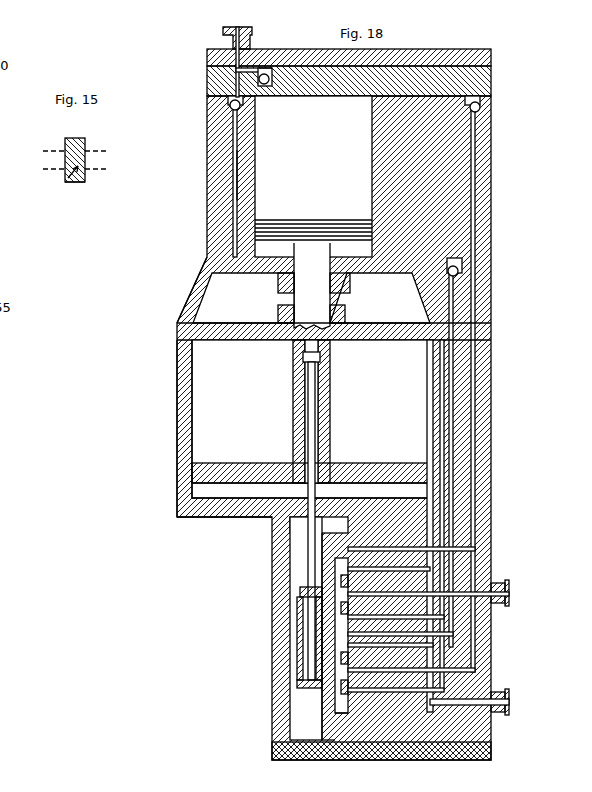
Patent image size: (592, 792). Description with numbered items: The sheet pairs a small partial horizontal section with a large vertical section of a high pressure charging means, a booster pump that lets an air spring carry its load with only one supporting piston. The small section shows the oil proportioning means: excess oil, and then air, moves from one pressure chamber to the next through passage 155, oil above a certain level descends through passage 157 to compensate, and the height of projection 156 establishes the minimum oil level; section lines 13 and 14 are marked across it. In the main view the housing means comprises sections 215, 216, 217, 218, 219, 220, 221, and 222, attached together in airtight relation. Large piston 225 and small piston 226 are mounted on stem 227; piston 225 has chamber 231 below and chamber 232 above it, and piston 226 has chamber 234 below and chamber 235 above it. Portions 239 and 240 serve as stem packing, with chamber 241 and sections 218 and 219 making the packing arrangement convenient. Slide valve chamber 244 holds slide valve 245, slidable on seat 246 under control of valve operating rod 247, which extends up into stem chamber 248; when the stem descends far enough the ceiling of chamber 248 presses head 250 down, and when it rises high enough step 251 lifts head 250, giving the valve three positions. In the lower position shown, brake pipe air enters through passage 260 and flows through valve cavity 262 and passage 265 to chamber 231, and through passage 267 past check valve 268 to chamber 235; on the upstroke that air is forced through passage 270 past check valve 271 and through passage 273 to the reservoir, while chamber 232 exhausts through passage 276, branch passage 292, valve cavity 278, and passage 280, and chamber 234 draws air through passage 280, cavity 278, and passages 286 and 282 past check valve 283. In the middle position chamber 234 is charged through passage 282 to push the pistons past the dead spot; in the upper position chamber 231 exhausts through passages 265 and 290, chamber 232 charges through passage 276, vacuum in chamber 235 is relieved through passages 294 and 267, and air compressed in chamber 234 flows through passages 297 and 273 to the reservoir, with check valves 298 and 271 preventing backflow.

In FIG. 15, the section line 13 is at (76, 151).
In FIG. 15, the section line 14 is at (76, 169).
In FIG. 15, the passage 155 is at (82, 138).
In FIG. 15, the projection 156 is at (69, 180).
In FIG. 15, the passage 157 is at (84, 181).
In FIG. 18, the housing section 215 is at (272, 750).
In FIG. 18, the housing section 216 is at (217, 513).
In FIG. 18, the housing section 217 is at (180, 405).
In FIG. 18, the housing section 218 is at (181, 333).
In FIG. 18, the housing section 219 is at (198, 297).
In FIG. 18, the housing section 220 is at (207, 208).
In FIG. 18, the housing section 221 is at (492, 80).
In FIG. 18, the housing section 222 is at (492, 58).
In FIG. 18, the large piston 225 is at (364, 471).
In FIG. 18, the small piston 226 is at (302, 228).
In FIG. 18, the stem 227 is at (296, 299).
In FIG. 18, the chamber 231 is at (200, 493).
In FIG. 18, the chamber 232 is at (200, 441).
In FIG. 18, the chamber 234 is at (343, 275).
In FIG. 18, the chamber 235 is at (355, 167).
In FIG. 18, the portion 239 is at (342, 315).
In FIG. 18, the portion 240 is at (285, 286).
In FIG. 18, the chamber 241 is at (195, 312).
In FIG. 18, the slide valve chamber 244 is at (296, 727).
In FIG. 18, the slide valve 245 is at (333, 729).
In FIG. 18, the seat 246 is at (350, 729).
In FIG. 18, the valve operating rod 247 is at (314, 421).
In FIG. 18, the stem chamber 248 is at (325, 391).
In FIG. 18, the head 250 is at (321, 357).
In FIG. 18, the step 251 is at (318, 466).
In FIG. 18, the passage 260 is at (510, 701).
In FIG. 18, the valve cavity 262 is at (340, 697).
In FIG. 18, the passage 265 is at (425, 712).
In FIG. 18, the passage 267 is at (440, 672).
In FIG. 18, the check valve 268 is at (481, 107).
In FIG. 18, the passage 270 is at (266, 86).
In FIG. 18, the check valve 271 is at (263, 66).
In FIG. 18, the passage 273 is at (240, 27).
In FIG. 18, the passage 276 is at (435, 690).
In FIG. 18, the valve cavity 278 is at (340, 607).
In FIG. 18, the passage 280 is at (510, 592).
In FIG. 18, the passage 282 is at (405, 635).
In FIG. 18, the check valve 283 is at (460, 272).
In FIG. 18, the passage 286 is at (412, 617).
In FIG. 18, the passage 290 is at (410, 568).
In FIG. 18, the branch passage 292 is at (450, 644).
In FIG. 18, the passage 294 is at (388, 548).
In FIG. 18, the passage 297 is at (240, 152).
In FIG. 18, the check valve 298 is at (240, 107).